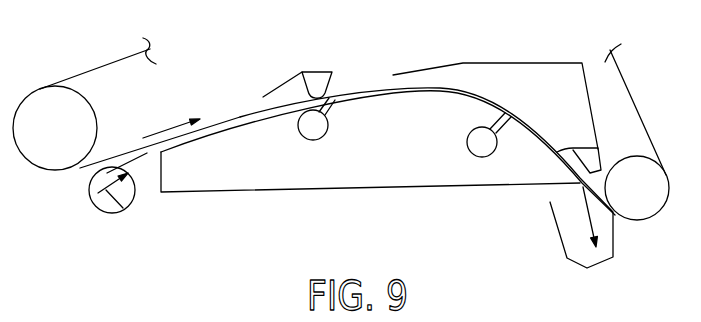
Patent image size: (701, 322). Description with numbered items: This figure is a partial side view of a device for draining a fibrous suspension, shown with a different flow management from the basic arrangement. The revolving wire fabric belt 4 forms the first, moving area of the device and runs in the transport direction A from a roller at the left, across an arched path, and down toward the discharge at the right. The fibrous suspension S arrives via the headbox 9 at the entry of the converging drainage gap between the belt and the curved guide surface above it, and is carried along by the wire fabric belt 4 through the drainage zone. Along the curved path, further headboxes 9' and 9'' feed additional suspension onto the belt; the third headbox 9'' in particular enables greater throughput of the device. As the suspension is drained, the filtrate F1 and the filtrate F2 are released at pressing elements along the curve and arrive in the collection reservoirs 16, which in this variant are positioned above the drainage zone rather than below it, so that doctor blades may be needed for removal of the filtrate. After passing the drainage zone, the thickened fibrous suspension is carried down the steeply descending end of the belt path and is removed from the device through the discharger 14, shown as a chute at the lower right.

The wire fabric belt 4 is at (118, 60).
The transport direction A is at (176, 125).
The headbox 9 is at (107, 213).
The fibrous suspension S is at (124, 213).
The collection reservoir 16 is at (280, 85).
The filtrate F1 is at (317, 90).
The headbox 9' is at (314, 164).
The third headbox 9'' is at (485, 167).
The filtrate F2 is at (592, 155).
The discharger 14 is at (577, 238).